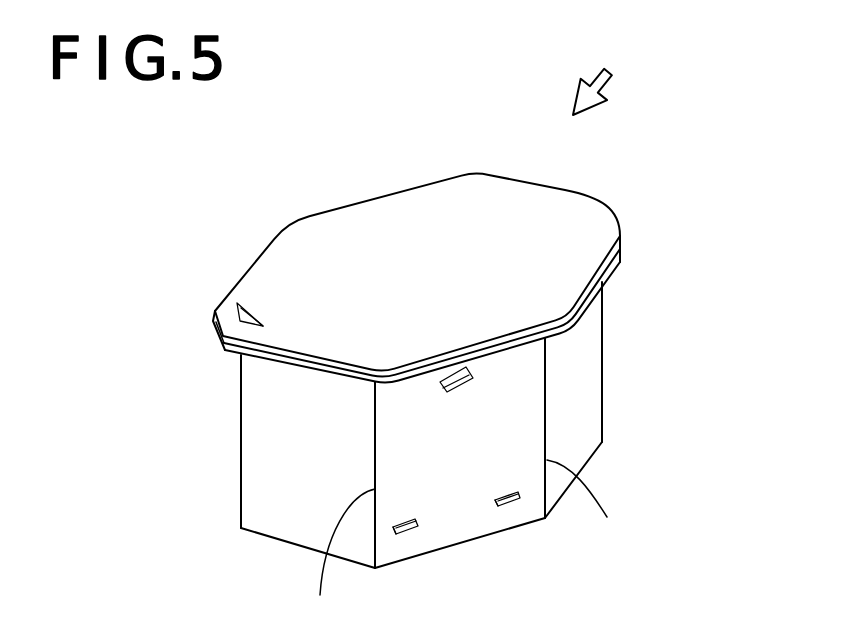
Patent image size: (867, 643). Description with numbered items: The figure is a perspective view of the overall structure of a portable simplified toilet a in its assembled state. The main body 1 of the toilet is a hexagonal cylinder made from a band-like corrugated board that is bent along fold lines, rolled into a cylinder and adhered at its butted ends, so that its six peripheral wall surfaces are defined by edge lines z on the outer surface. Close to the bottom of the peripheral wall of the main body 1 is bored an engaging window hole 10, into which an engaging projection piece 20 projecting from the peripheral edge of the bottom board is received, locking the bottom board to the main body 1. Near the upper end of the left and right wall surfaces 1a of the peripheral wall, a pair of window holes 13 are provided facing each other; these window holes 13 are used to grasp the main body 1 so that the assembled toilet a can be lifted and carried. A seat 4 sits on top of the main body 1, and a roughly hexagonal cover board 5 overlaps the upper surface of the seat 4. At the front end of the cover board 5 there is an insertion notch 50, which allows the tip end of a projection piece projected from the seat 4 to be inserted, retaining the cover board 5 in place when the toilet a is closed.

The main body 1 is at (604, 363).
The wall surface 1a is at (510, 435).
The seat 4 is at (611, 266).
The cover board 5 is at (495, 172).
The engaging window hole 10 is at (396, 531).
The window hole 13 is at (453, 388).
The engaging projection piece 20 is at (416, 534).
The insertion notch 50 is at (238, 316).
The edge line Z is at (468, 542).
The simplified toilet a is at (598, 80).